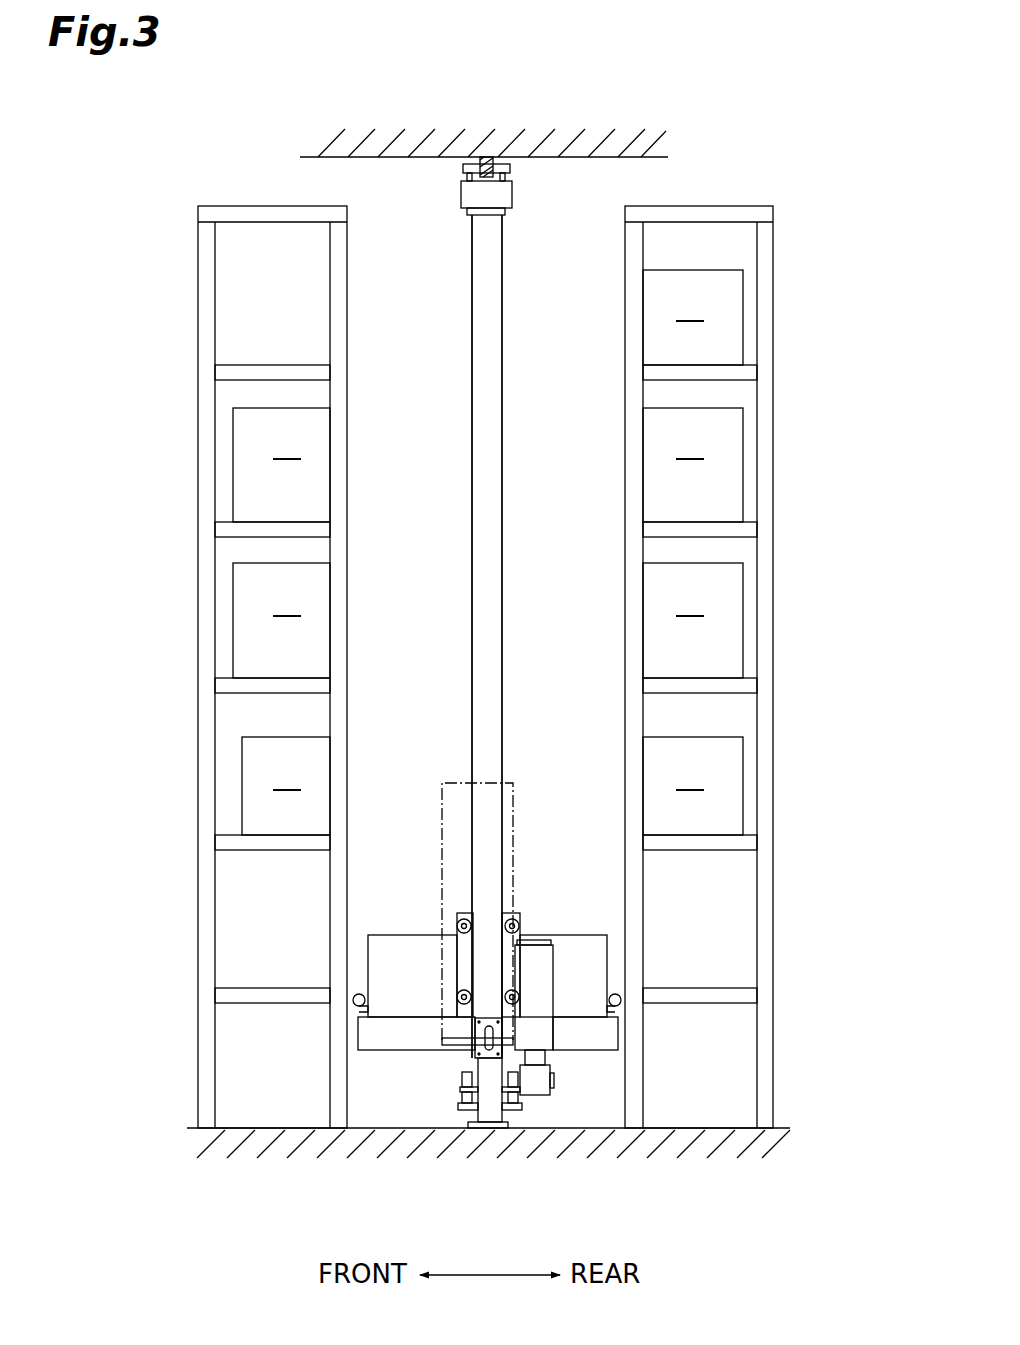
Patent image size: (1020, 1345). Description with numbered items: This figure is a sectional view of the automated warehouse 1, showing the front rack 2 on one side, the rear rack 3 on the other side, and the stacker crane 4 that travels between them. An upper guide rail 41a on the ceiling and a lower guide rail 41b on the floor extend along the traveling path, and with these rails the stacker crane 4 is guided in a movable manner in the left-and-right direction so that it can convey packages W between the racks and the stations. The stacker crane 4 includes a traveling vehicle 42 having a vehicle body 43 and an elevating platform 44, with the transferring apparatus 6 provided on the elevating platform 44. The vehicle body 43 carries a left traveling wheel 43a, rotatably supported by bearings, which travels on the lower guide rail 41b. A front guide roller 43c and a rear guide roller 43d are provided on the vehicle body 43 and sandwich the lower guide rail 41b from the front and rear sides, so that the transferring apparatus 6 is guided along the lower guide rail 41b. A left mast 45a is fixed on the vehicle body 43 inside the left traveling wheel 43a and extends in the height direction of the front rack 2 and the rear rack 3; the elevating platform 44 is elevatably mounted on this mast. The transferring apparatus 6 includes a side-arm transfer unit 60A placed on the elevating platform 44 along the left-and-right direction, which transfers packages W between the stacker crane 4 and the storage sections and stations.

The automated warehouse 1 is at (762, 122).
The front rack 2 is at (196, 457).
The rear rack 3 is at (777, 482).
The stacker crane 4 is at (507, 527).
The transferring apparatus 6 is at (565, 932).
The upper guide rail 41a is at (485, 157).
The lower guide rail 41b is at (488, 1122).
The traveling vehicle 42 is at (354, 1030).
The vehicle body 43 is at (450, 1077).
The left traveling wheel 43a is at (512, 1069).
The front guide roller 43c is at (466, 1112).
The rear guide roller 43d is at (507, 1113).
The elevating platform 44 is at (618, 1037).
The left mast 45a is at (487, 722).
The side-arm transfer unit 60A is at (607, 968).